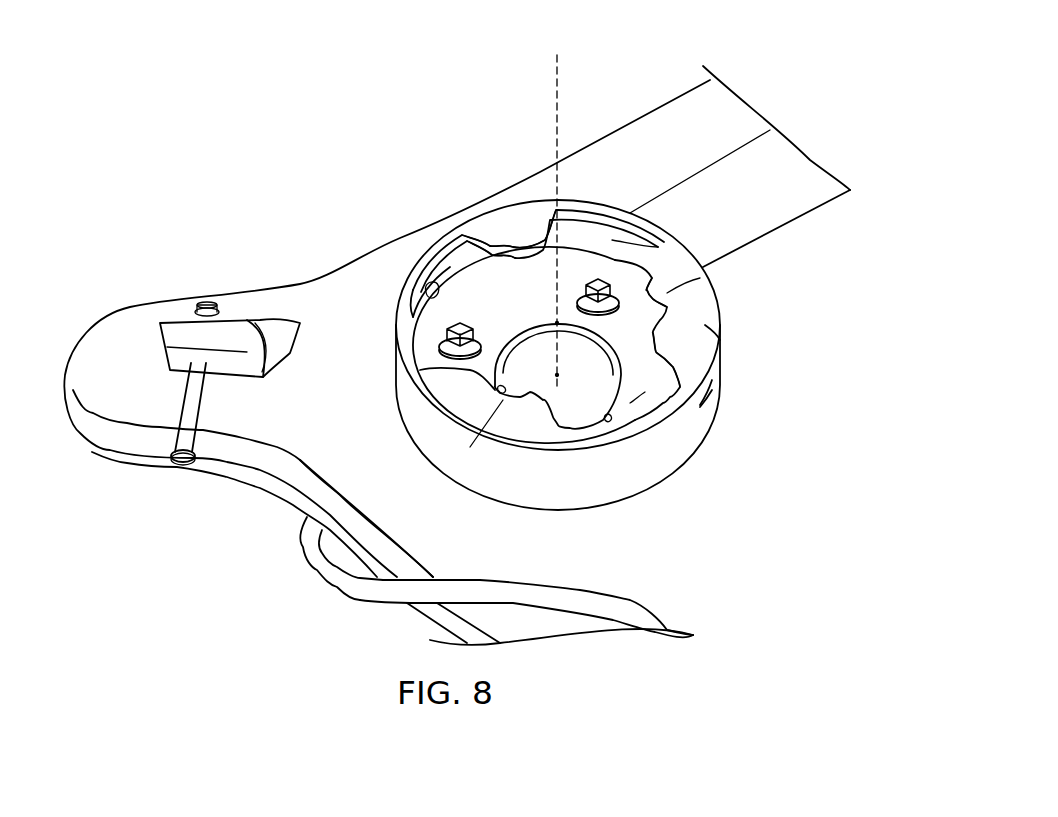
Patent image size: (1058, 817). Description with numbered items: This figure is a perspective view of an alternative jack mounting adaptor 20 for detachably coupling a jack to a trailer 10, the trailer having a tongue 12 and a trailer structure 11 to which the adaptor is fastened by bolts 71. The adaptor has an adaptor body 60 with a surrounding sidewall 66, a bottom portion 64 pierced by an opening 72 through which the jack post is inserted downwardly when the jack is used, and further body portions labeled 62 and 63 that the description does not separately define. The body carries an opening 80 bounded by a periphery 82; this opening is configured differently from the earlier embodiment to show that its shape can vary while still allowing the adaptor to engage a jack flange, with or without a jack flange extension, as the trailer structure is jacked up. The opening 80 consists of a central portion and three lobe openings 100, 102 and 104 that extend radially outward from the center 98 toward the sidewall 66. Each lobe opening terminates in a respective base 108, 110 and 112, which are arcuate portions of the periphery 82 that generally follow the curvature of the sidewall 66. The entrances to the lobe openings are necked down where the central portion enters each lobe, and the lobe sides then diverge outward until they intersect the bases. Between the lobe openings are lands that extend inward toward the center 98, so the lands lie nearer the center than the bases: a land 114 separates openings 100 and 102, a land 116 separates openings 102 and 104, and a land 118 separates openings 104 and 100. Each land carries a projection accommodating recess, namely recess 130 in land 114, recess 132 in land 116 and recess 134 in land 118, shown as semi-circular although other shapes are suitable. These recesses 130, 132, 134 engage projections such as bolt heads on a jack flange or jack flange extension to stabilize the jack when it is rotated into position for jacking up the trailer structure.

The trailer 10 is at (132, 474).
The trailer structure 11 is at (287, 443).
The tongue 12 is at (97, 333).
The jack mounting adaptor 20 is at (713, 280).
The adaptor body 60 is at (725, 315).
The plate upper face 62 is at (708, 325).
The rim portion 63 is at (418, 300).
The bottom portion 64 is at (700, 405).
The sidewall 66 is at (700, 407).
The bolts 71 is at (460, 320).
The opening 72 is at (543, 390).
The opening 80 is at (640, 243).
The periphery 82 is at (583, 220).
The center 98 is at (557, 322).
The lobe opening 100 is at (612, 240).
The lobe opening 102 is at (440, 338).
The lobe opening 104 is at (630, 403).
The base 108 is at (665, 246).
The base 110 is at (418, 300).
The base 112 is at (610, 425).
The land 114 is at (527, 222).
The land 116 is at (450, 392).
The land 118 is at (700, 278).
The projection accommodating recess 130 is at (493, 218).
The projection accommodating recess 132 is at (442, 467).
The projection accommodating recess 134 is at (710, 367).